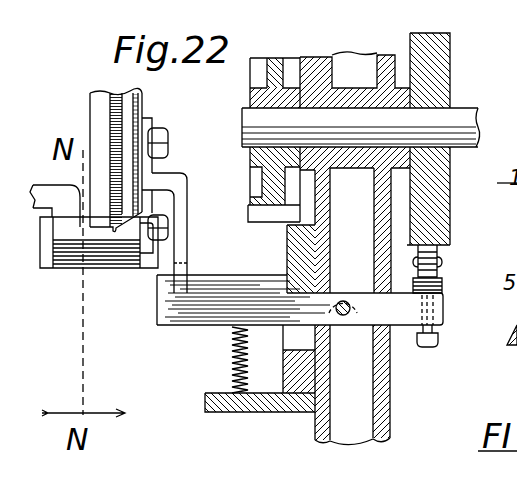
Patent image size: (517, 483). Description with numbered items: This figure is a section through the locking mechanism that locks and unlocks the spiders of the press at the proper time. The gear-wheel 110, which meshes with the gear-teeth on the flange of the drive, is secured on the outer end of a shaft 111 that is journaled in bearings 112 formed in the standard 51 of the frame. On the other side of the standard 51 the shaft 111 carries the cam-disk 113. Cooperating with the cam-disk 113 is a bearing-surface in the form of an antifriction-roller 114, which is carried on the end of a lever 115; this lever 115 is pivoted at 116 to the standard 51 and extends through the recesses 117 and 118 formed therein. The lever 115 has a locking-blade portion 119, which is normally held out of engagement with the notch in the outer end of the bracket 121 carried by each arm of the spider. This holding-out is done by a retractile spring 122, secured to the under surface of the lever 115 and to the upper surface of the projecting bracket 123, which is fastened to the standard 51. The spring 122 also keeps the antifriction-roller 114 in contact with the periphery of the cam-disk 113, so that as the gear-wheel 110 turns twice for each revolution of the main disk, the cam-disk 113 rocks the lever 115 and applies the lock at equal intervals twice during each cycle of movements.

The standard 51 is at (339, 230).
The gear-wheel 110 is at (253, 192).
The shaft 111 is at (427, 117).
The bearings 112 is at (397, 98).
The cam-disk 113 is at (432, 52).
The antifriction-roller 114 is at (432, 260).
The lever 115 is at (408, 318).
The pivot 116 is at (347, 290).
The recess 117 is at (315, 330).
The recess 118 is at (383, 287).
The locking-blade portion 119 is at (210, 283).
The bracket 121 is at (178, 184).
The retractile spring 122 is at (227, 374).
The projecting bracket 123 is at (268, 410).